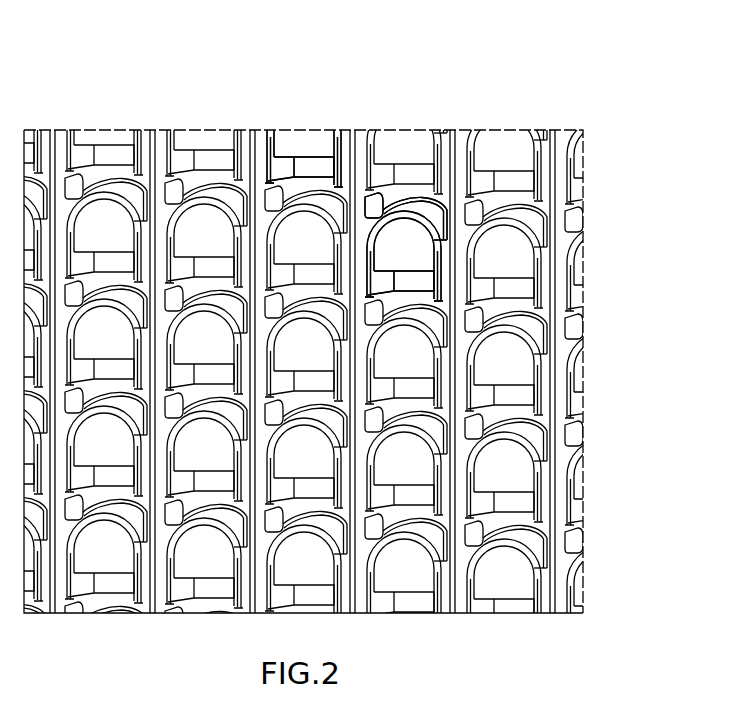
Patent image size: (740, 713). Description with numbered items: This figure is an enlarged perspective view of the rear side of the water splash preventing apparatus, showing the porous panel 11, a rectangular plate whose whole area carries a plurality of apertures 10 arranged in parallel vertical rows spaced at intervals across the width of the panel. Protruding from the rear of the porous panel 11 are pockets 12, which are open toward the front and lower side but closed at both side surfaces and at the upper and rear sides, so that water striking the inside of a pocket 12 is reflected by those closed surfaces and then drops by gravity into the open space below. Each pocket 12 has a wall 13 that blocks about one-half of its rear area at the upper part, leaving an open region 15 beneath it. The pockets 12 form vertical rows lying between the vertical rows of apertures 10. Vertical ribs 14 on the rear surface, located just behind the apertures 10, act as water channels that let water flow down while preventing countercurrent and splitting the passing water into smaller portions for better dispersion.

The aperture 10 is at (583, 216).
The porous panel 11 is at (497, 198).
The pocket 12 is at (515, 120).
The wall 13 is at (388, 143).
The rib 14 is at (550, 275).
The open region 15 is at (410, 148).